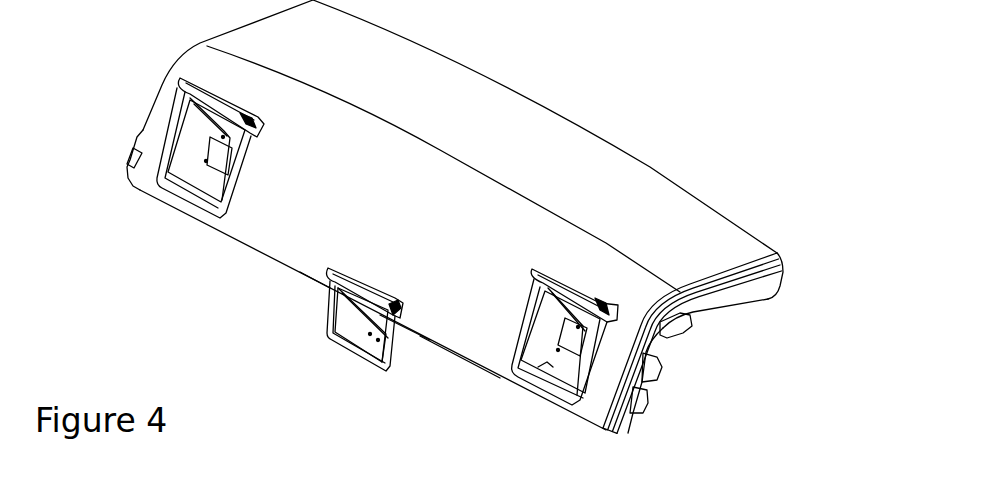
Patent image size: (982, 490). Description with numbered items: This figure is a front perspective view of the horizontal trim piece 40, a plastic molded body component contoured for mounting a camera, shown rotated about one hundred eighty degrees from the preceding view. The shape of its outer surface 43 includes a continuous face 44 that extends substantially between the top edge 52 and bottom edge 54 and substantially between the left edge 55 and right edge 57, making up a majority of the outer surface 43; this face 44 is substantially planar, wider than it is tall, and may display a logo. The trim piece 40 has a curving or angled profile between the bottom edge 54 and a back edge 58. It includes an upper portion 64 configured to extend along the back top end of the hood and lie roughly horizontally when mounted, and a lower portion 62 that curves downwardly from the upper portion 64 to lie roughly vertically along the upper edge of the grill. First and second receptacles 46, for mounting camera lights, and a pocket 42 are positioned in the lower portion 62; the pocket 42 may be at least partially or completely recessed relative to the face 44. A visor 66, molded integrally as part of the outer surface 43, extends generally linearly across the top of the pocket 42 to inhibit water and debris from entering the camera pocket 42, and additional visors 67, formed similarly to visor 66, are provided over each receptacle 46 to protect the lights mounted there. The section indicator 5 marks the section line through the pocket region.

The section line 5- 5 is at (350, 234).
The horizontal trim piece 40 is at (132, 235).
The pocket 42 is at (328, 320).
The outer surface 43 is at (490, 246).
The continuous face 44 is at (425, 331).
The receptacles 46 is at (197, 120).
The top edge 52 is at (383, 113).
The bottom edge 54 is at (236, 237).
The left edge 55 is at (138, 129).
The right edge 57 is at (660, 362).
The back edge 58 is at (565, 112).
The lower portion 62 is at (704, 305).
The upper portion 64 is at (777, 253).
The visor 66 is at (404, 307).
The additional visors 67 is at (213, 90).